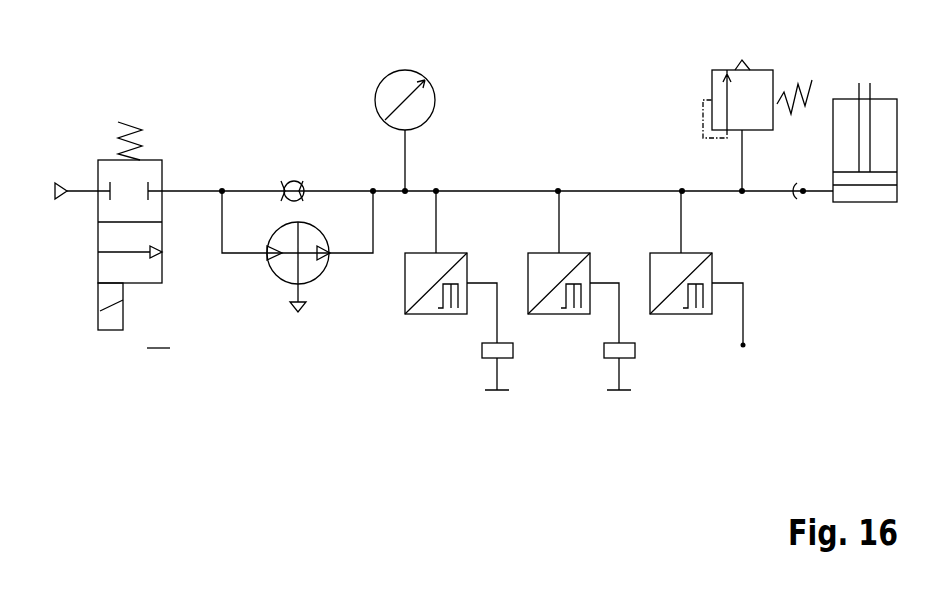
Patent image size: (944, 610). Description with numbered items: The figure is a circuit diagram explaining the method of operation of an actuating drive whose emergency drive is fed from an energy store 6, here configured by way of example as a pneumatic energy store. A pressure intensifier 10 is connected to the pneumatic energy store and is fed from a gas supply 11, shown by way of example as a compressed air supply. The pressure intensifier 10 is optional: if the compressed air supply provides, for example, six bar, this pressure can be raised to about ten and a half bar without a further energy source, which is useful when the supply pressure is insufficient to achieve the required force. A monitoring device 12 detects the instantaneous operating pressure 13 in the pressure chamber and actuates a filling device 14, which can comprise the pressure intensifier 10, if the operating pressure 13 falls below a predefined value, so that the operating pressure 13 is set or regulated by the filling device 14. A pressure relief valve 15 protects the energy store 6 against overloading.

The energy store 6 is at (865, 202).
The pressure intensifier 10 is at (308, 268).
The gas supply 11 is at (55, 192).
The monitoring device 12 is at (372, 427).
The operating pressure 13 is at (428, 102).
The filling device 14 is at (419, 306).
The pressure relief valve 15 is at (745, 85).